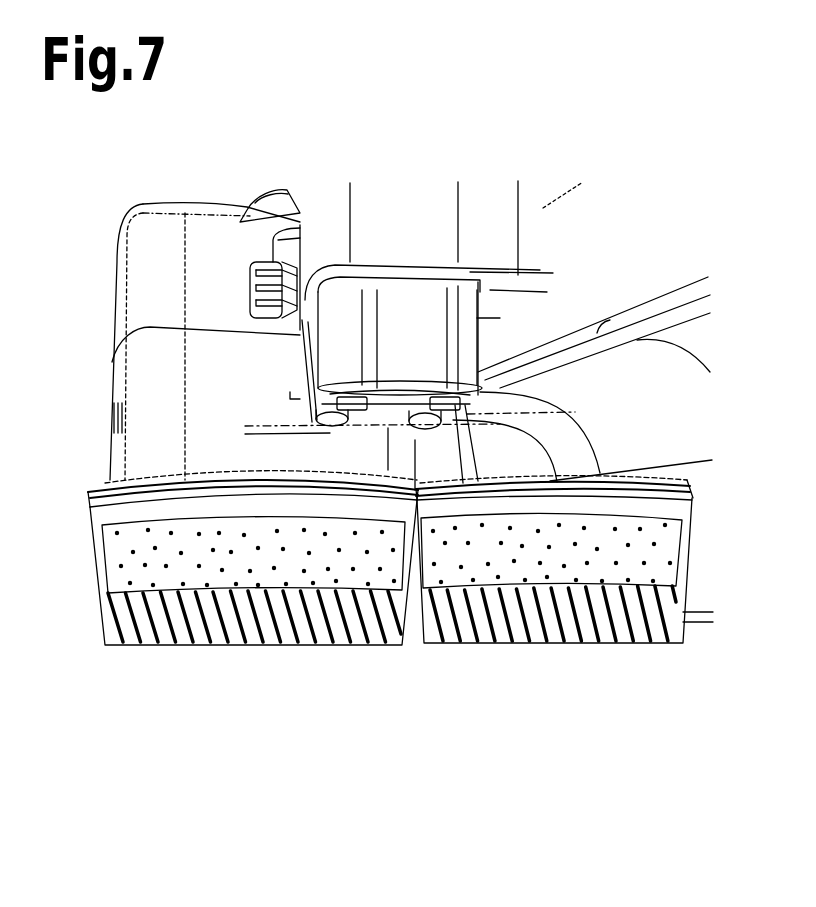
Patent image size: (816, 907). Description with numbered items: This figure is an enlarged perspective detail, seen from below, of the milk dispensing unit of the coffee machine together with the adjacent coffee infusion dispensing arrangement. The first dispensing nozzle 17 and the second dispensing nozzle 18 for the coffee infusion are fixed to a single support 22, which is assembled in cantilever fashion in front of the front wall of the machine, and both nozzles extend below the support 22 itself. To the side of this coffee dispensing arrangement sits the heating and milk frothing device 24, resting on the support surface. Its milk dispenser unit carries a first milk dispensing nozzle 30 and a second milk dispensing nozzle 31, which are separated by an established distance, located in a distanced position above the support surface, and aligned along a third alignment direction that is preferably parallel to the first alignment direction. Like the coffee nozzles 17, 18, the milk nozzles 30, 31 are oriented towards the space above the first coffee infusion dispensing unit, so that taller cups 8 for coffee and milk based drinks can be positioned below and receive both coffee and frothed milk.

The taller cups 8 is at (230, 562).
The first dispensing nozzle 17 is at (335, 406).
The second dispensing nozzle 18 is at (358, 392).
The support 22 is at (370, 205).
The heating and milk frothing device 24 is at (148, 327).
The first milk dispensing nozzle 30 is at (412, 432).
The second milk dispensing nozzle 31 is at (316, 425).